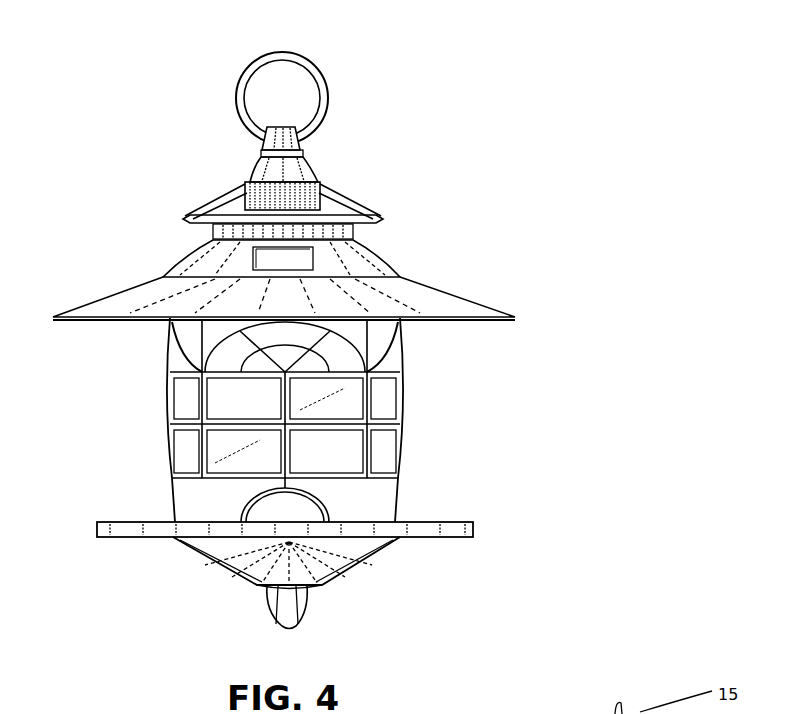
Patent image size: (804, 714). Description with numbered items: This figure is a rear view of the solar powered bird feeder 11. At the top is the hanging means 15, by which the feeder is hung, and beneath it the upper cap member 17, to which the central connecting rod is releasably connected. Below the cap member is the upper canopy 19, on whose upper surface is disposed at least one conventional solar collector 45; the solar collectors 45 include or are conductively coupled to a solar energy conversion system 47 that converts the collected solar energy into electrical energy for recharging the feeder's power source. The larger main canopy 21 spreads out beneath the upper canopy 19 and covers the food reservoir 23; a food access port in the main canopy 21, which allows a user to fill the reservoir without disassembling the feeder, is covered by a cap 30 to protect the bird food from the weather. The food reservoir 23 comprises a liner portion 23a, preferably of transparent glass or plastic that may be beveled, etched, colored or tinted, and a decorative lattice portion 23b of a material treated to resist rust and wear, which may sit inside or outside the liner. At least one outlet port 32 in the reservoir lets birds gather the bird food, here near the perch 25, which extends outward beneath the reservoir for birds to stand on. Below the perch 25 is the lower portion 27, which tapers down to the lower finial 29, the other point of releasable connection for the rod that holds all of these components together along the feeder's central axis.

The bird feeder 11 is at (592, 408).
The hanging means 15 is at (332, 88).
The upper cap member 17 is at (305, 145).
The upper canopy 19 is at (315, 157).
The main canopy 21 is at (400, 225).
The food reservoir 23 is at (420, 373).
The liner portion 23a is at (383, 402).
The decorative lattice portion 23b is at (188, 416).
The perch 25 is at (450, 520).
The lower portion 27 is at (325, 552).
The lower finial 29 is at (310, 612).
The cap 30 is at (273, 258).
The outlet port 32 is at (275, 510).
The solar collector 45 is at (260, 188).
The solar energy conversion system 47 is at (228, 208).